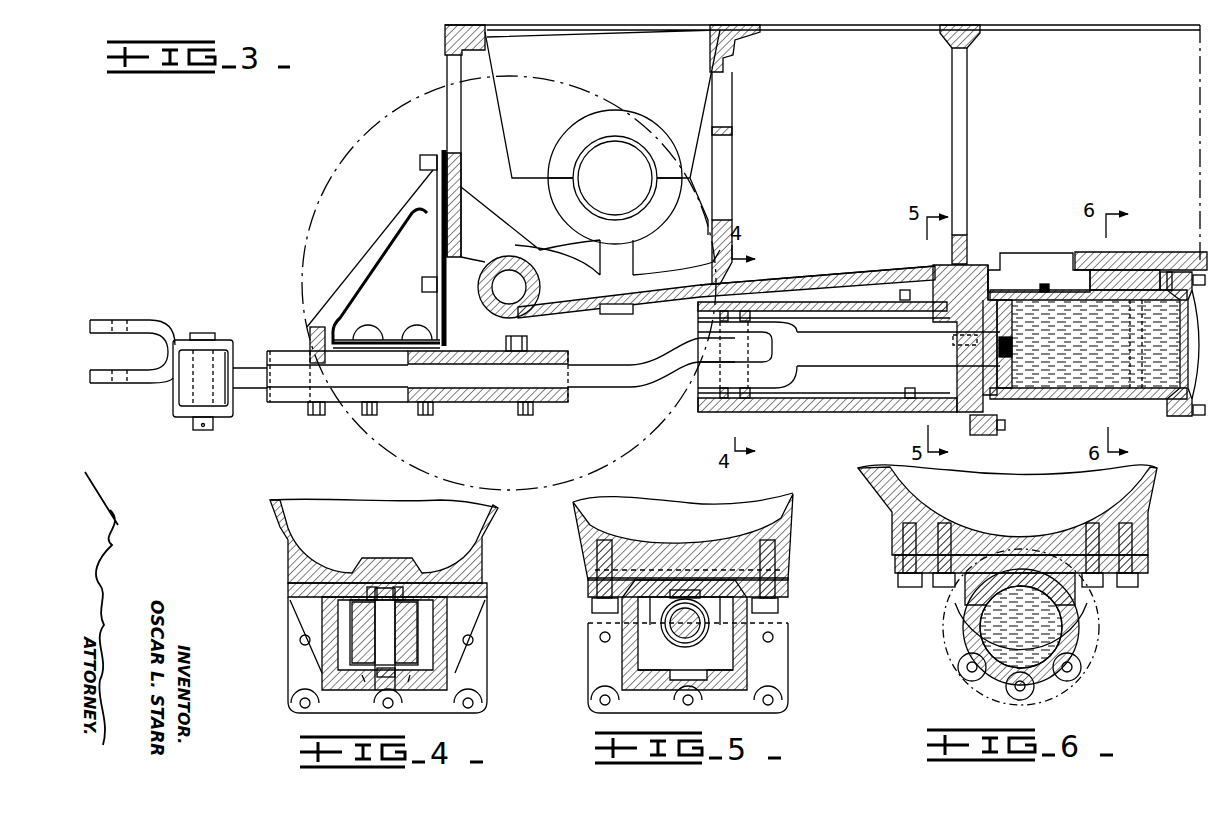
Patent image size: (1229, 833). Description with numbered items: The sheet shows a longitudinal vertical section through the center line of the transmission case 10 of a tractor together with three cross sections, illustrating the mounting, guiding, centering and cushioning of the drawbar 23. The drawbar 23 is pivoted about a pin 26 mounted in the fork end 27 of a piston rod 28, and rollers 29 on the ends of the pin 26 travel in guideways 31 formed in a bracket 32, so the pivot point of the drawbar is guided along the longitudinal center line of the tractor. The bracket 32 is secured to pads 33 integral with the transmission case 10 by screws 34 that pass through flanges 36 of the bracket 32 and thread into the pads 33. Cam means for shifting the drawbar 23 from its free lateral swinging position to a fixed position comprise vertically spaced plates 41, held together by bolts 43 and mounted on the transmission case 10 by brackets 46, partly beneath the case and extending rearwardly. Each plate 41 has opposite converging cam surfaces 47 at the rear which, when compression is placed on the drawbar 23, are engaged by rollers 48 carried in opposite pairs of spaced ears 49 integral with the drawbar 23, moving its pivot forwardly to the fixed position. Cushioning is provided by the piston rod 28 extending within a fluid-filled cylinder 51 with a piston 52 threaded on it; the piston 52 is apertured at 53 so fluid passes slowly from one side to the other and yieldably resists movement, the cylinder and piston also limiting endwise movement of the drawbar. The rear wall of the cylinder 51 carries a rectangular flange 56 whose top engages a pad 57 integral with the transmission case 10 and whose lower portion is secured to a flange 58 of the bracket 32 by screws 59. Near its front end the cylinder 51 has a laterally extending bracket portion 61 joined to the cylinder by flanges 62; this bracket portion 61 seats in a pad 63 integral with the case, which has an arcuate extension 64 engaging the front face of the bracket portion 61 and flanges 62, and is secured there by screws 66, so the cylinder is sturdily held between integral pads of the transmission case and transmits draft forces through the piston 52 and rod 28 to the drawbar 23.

In FIG. 3, the transmission case 10 is at (826, 283).
In FIG. 4, the transmission case 10 is at (292, 558).
In FIG. 5, the transmission case 10 is at (787, 505).
In FIG. 6, the transmission case 10 is at (1138, 487).
In FIG. 3, the drawbar 23 is at (598, 385).
In FIG. 4, the drawbar 23 is at (410, 623).
In FIG. 3, the pin 26 is at (733, 412).
In FIG. 4, the pin 26 is at (387, 588).
In FIG. 3, the fork end 27 is at (780, 322).
In FIG. 4, the fork end 27 is at (347, 604).
In FIG. 3, the piston rod 28 is at (888, 350).
In FIG. 5, the piston rod 28 is at (692, 625).
In FIG. 3, the rollers 29 is at (752, 302).
In FIG. 4, the rollers 29 is at (408, 587).
In FIG. 3, the guideways 31 is at (854, 303).
In FIG. 4, the guideways 31 is at (365, 587).
In FIG. 5, the guideways 31 is at (690, 592).
In FIG. 3, the bracket 32 is at (892, 305).
In FIG. 4, the bracket 32 is at (450, 662).
In FIG. 5, the bracket 32 is at (750, 653).
In FIG. 3, the pads 33 is at (852, 298).
In FIG. 4, the pads 33 is at (316, 572).
In FIG. 5, the pads 33 is at (630, 552).
In FIG. 6, the pads 33 is at (1007, 511).
In FIG. 5, the screws 34 is at (593, 607).
In FIG. 5, the flanges 36 is at (592, 592).
In FIG. 3, the plates 41 is at (288, 351).
In FIG. 3, the bolts 43 is at (312, 410).
In FIG. 3, the brackets 46 is at (388, 238).
In FIG. 3, the cam surfaces 47 is at (299, 398).
In FIG. 3, the rollers 48 is at (186, 395).
In FIG. 3, the ears 49 is at (228, 352).
In FIG. 3, the cylinder 51 is at (1080, 392).
In FIG. 6, the cylinder 51 is at (1040, 680).
In FIG. 3, the piston 52 is at (1036, 270).
In FIG. 3, the aperture 53 is at (1008, 375).
In FIG. 3, the rectangular flange 56 is at (1012, 290).
In FIG. 5, the rectangular flange 56 is at (750, 625).
In FIG. 3, the pad 57 is at (975, 295).
In FIG. 5, the pad 57 is at (593, 620).
In FIG. 3, the flange 58 is at (975, 428).
In FIG. 4, the flange 58 is at (288, 683).
In FIG. 5, the flange 58 is at (773, 678).
In FIG. 3, the screws 59 is at (1002, 425).
In FIG. 5, the screws 59 is at (603, 695).
In FIG. 3, the bracket portion 61 is at (1127, 280).
In FIG. 6, the bracket portion 61 is at (893, 568).
In FIG. 3, the flanges 62 is at (1127, 370).
In FIG. 6, the flanges 62 is at (940, 592).
In FIG. 3, the pad 63 is at (1140, 265).
In FIG. 6, the pad 63 is at (1005, 553).
In FIG. 3, the arcuate extension 64 is at (1173, 280).
In FIG. 6, the arcuate extension 64 is at (957, 645).
In FIG. 6, the screws 66 is at (920, 582).